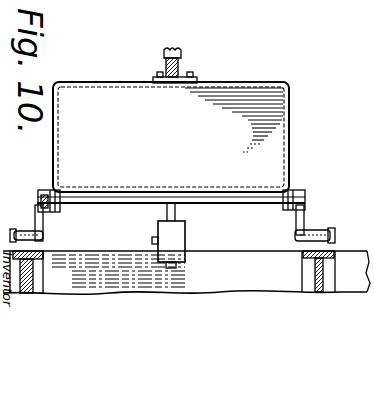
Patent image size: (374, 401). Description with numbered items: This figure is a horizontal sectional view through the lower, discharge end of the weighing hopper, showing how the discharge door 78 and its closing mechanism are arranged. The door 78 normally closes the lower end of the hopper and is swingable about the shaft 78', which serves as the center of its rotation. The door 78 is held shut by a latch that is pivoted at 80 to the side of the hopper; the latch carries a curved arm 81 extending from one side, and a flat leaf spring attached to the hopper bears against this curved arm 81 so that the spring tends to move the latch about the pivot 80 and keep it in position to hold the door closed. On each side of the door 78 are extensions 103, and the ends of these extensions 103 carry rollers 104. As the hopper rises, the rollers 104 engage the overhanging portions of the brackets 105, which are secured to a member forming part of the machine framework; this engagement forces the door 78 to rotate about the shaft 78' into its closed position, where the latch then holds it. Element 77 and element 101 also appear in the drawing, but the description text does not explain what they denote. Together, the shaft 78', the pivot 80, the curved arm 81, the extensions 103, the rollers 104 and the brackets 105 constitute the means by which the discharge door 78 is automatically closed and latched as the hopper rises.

The housing wall lining 77 is at (249, 81).
The door 78 is at (171, 137).
The shaft 78' is at (171, 215).
The pivot 80 is at (168, 68).
The curved arm 81 is at (181, 54).
The switch unit 101 is at (186, 227).
The extensions 103 is at (34, 228).
The rollers 104 is at (18, 234).
The brackets 105 is at (33, 294).